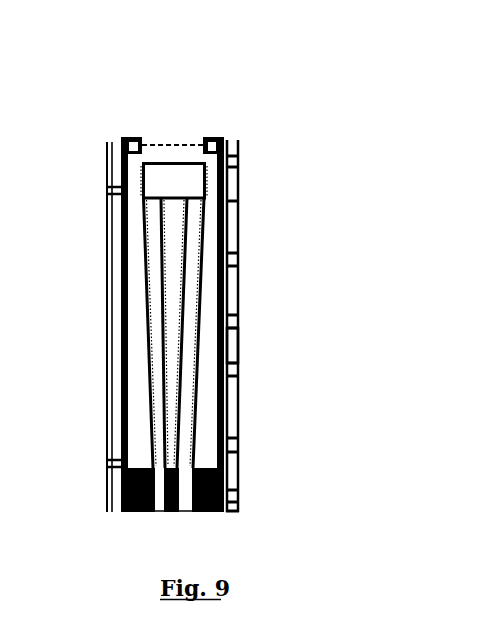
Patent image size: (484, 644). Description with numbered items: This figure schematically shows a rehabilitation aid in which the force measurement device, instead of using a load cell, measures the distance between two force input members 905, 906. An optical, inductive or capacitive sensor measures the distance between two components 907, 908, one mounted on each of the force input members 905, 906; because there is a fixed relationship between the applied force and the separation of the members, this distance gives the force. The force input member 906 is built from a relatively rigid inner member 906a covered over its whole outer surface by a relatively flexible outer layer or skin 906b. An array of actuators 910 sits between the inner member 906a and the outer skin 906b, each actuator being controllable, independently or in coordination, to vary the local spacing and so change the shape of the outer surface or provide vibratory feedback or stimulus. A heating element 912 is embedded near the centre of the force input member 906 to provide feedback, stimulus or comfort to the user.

The force input member 905 is at (122, 147).
The distance measurement component 907 is at (137, 137).
The distance measurement component 908 is at (208, 137).
The inner member 906a is at (225, 137).
The outer layer or skin 906b is at (240, 183).
The force input member 906 is at (239, 463).
The actuators 910 is at (231, 207).
The heating element 912 is at (233, 348).